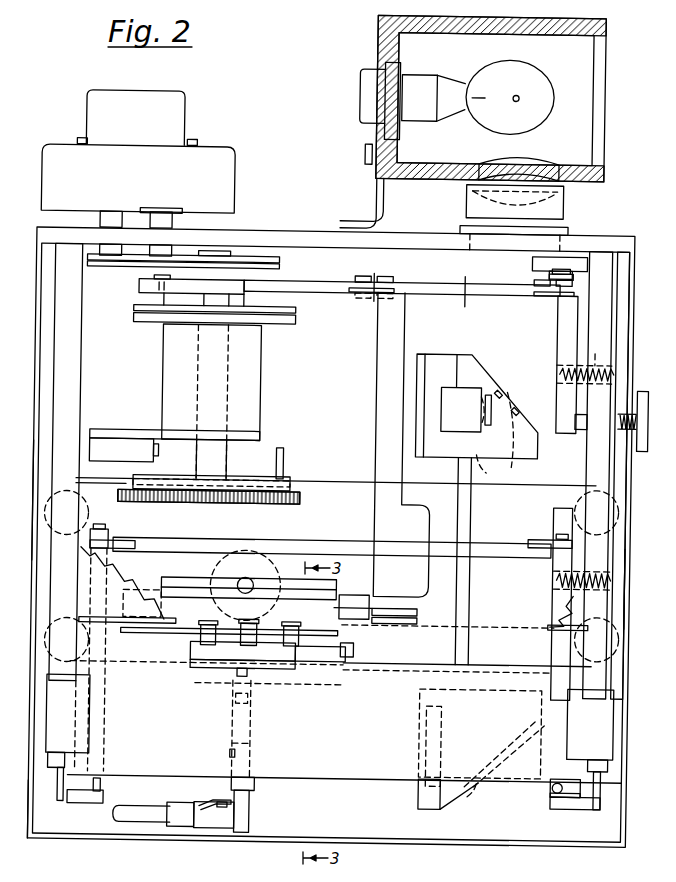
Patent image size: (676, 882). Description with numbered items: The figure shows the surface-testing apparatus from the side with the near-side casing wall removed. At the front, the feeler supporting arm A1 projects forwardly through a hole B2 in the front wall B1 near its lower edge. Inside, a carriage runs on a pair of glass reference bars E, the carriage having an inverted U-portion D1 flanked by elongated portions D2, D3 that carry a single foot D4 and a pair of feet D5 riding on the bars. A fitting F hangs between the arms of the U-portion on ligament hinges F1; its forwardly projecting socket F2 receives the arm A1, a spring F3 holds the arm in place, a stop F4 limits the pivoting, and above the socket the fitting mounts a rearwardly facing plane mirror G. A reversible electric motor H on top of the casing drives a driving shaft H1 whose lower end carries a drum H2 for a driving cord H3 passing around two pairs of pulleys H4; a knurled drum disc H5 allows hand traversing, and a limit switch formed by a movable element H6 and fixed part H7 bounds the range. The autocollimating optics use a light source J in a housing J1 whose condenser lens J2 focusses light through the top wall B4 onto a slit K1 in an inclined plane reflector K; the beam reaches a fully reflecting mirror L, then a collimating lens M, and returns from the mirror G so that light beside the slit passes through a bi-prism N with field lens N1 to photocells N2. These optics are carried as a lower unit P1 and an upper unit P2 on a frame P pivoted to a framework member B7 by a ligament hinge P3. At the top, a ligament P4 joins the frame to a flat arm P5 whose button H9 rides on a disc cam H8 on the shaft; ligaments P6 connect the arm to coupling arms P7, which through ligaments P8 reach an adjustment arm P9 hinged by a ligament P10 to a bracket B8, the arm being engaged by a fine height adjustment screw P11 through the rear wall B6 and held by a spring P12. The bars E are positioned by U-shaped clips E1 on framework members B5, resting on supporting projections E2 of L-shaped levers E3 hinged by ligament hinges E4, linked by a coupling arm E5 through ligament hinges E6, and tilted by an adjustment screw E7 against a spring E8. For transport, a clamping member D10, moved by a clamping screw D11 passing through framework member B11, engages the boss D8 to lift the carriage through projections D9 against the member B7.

The reversible electric motor H is at (226, 170).
The driving shaft H1 is at (230, 273).
The drum H2 is at (252, 482).
The driving cord H3 is at (324, 476).
The pulleys H4 is at (640, 650).
The drum disc H5 is at (300, 494).
The movable element of limit switch H6 is at (284, 460).
The fixed part of limit switch H7 is at (128, 455).
The disc cam H8 is at (278, 300).
The button H9 is at (158, 300).
The source of light J is at (517, 90).
The housing J1 is at (598, 96).
The condenser lens J2 is at (563, 195).
The front wall B1 is at (38, 505).
The hole B2 is at (40, 812).
The top wall B4 is at (400, 240).
The framework members B5 is at (80, 440).
The rear wall B6 is at (634, 322).
The framework member B7 is at (350, 590).
The bracket B8 is at (578, 260).
The framework member B11 is at (134, 592).
The frame P is at (423, 478).
The lower unit P1 is at (462, 792).
The upper unit P2 is at (480, 471).
The ligament hinge P3 is at (384, 603).
The ligament P4 is at (373, 292).
The flat arm P5 is at (325, 292).
The ligaments P6 is at (376, 282).
The coupling arms P7 is at (464, 305).
The ligaments P8 is at (552, 292).
The adjustment arm P9 is at (558, 346).
The ligament P10 is at (563, 280).
The fine height adjustment screw P11 is at (645, 384).
The spring P12 is at (586, 361).
The bi-prism N is at (486, 418).
The field lens N1 is at (495, 390).
The photocells N2 is at (432, 400).
The plane reflector K is at (514, 396).
The slit K1 is at (516, 437).
The reference bars E is at (215, 728).
The U-shaped clips E1 is at (78, 718).
The supporting projections E2 is at (103, 783).
The L-shaped lever E3 is at (112, 765).
The ligament hinges E4 is at (72, 790).
The coupling arm E5 is at (352, 536).
The ligament hinges E6 is at (114, 540).
The adjustment screw E7 is at (620, 575).
The spring E8 is at (635, 596).
The inverted U-portion D1 is at (258, 712).
The elongated portion D2 is at (197, 650).
The elongated portion D3 is at (360, 646).
The foot D4 is at (255, 672).
The feet D5 is at (208, 665).
The boss D8 is at (255, 620).
The projections D9 is at (210, 622).
The clamping member D10 is at (292, 576).
The clamping screw D11 is at (247, 550).
The fitting F is at (258, 808).
The ligament hinges F1 is at (226, 793).
The socket F2 is at (205, 826).
The spring F3 is at (231, 806).
The stop F4 is at (242, 696).
The plane mirror G is at (258, 740).
The supporting arm A1 is at (144, 822).
The collimating lens M is at (430, 784).
The fully reflecting mirror L is at (504, 772).